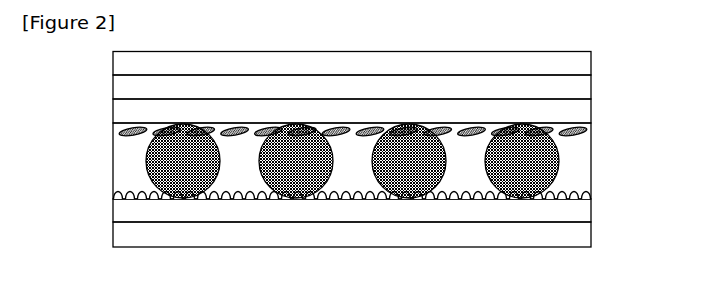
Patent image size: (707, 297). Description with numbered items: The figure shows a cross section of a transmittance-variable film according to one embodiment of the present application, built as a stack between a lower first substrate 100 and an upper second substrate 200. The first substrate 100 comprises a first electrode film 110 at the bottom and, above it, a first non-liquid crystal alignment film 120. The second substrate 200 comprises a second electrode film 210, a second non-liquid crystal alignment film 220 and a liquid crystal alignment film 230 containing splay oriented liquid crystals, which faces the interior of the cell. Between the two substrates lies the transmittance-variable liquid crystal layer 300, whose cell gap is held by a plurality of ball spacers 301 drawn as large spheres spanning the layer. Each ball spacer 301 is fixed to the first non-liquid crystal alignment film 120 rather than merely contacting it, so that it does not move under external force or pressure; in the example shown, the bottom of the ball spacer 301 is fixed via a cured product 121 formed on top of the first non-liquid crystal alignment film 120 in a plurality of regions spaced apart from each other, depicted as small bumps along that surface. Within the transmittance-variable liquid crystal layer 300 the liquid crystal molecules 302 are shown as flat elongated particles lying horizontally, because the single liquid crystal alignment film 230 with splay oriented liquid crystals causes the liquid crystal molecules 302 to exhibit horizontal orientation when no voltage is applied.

The first substrate 100 is at (398, 223).
The first electrode film 110 is at (591, 236).
The first non-liquid crystal alignment film 120 is at (375, 236).
The cured product 121 is at (540, 200).
The second substrate 200 is at (398, 88).
The second electrode film 210 is at (591, 65).
The second non-liquid crystal alignment film 220 is at (591, 89).
The liquid crystal alignment film 230 is at (591, 112).
The transmittance-variable liquid crystal layer 300 is at (375, 202).
The ball spacer 301 is at (505, 193).
The liquid crystal molecule 302 is at (583, 134).